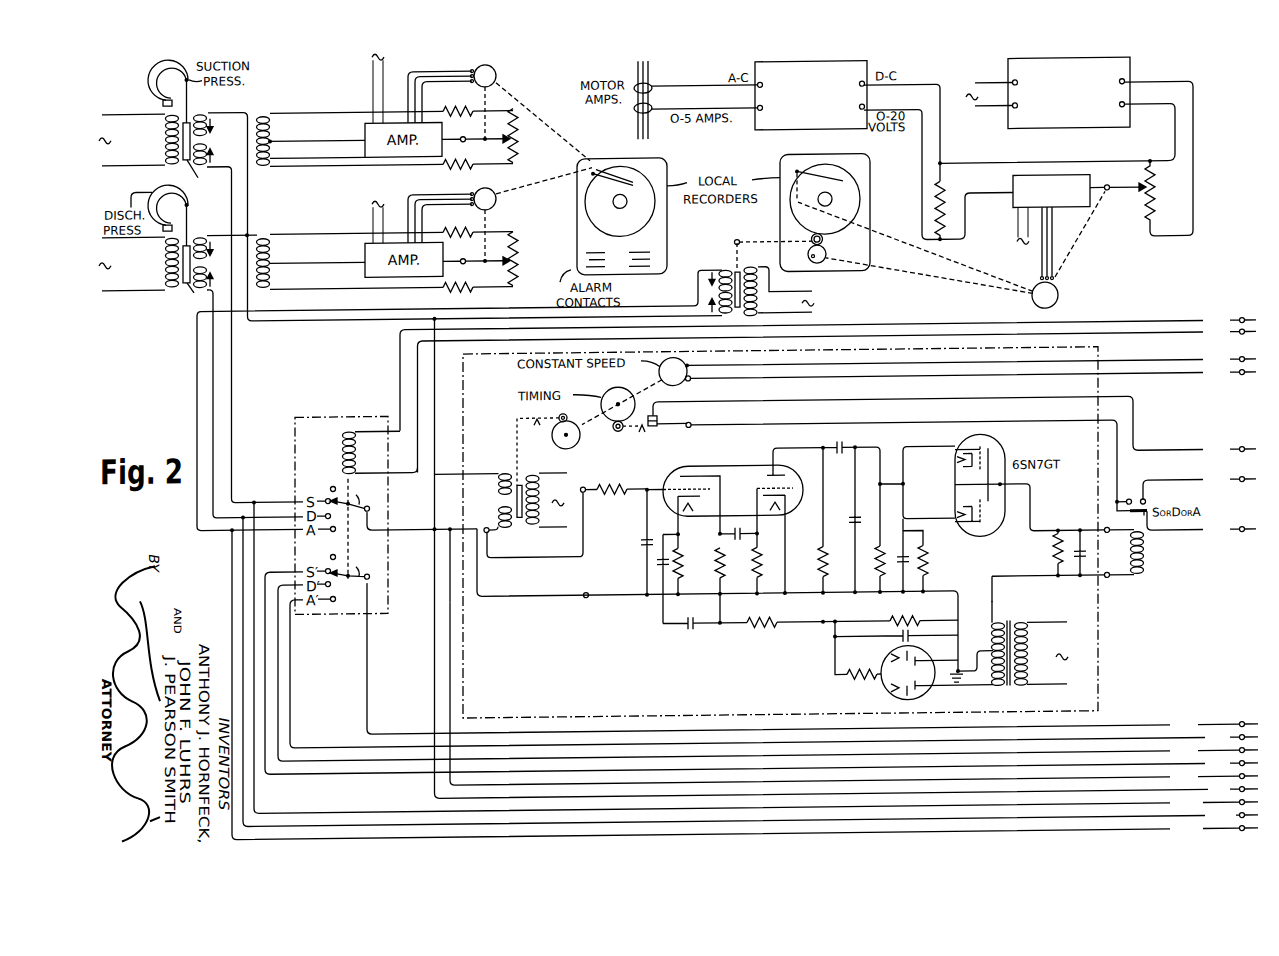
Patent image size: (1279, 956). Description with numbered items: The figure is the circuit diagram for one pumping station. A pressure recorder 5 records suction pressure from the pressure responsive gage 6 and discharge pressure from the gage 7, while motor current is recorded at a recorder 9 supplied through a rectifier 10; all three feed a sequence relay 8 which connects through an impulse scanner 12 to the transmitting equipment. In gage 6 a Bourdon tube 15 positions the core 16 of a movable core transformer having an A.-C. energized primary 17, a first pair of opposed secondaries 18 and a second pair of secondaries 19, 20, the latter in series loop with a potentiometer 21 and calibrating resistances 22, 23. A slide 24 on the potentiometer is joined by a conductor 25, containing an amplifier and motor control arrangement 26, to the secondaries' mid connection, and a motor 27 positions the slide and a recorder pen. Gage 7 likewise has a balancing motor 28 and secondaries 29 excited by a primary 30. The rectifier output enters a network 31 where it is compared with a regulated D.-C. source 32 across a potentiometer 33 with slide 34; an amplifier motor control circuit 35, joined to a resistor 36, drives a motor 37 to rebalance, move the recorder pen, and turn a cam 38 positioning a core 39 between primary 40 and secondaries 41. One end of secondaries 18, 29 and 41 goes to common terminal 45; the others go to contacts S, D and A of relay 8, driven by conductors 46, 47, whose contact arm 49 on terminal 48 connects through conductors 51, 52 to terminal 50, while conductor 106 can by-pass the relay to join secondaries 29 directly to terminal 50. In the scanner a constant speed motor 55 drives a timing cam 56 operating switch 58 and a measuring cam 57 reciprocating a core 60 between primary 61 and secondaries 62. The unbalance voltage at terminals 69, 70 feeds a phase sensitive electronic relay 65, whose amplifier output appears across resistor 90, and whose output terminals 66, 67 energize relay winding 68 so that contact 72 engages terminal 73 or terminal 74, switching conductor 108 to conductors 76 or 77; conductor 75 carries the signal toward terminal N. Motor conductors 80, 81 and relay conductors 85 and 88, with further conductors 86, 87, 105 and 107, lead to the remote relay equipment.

The pressure recorder 5 is at (577, 215).
The suction pressure gage 6 is at (205, 107).
The discharge pressure gage 7 is at (205, 226).
The sequence relay 8 is at (380, 418).
The motor current recorder 9 is at (871, 203).
The rectifier 10 is at (811, 95).
The impulse scanner 12 is at (722, 716).
The Bourdon tube 15 is at (154, 81).
The movable core 16 is at (202, 175).
The primary winding 17 is at (164, 147).
The first pair of opposed secondaries 18 is at (208, 141).
The secondary winding 19 is at (271, 124).
The secondary winding 20 is at (271, 150).
The potentiometer 21 is at (525, 148).
The calibrating resistance 22 is at (451, 108).
The calibrating resistance 23 is at (452, 170).
The slide 24 is at (470, 142).
The conductor 25 is at (318, 141).
The amplifier and motor control arrangement 26 is at (364, 152).
The balancing motor 27 is at (497, 80).
The balancing motor 28 is at (497, 207).
The pair of secondaries 29 is at (200, 274).
The primary winding 30 is at (164, 272).
The network 31 is at (1032, 154).
The regulated D.-C. source 32 is at (1132, 72).
The potentiometer 33 is at (1157, 193).
The slide 34 is at (1111, 191).
The amplifier motor control circuit 35 is at (1013, 201).
The resistor 36 is at (948, 188).
The motor 37 is at (1059, 298).
The cam 38 is at (826, 243).
The movable core 39 is at (735, 266).
The primary winding 40 is at (760, 297).
The secondaries 41 is at (717, 290).
The common terminal 45 is at (436, 472).
The conductor 46 is at (400, 430).
The conductor 47 is at (397, 482).
The terminal 48 is at (432, 525).
The contact arm 49 is at (368, 503).
The terminal 50 is at (488, 525).
The conductor 51 is at (424, 576).
The conductor 52 is at (450, 686).
The constant speed motor 55 is at (686, 383).
The timing cam 56 is at (607, 418).
The measuring cam 57 is at (562, 447).
The electric switch 58 is at (667, 429).
The movable core 60 is at (521, 517).
The primary winding 61 is at (540, 490).
The pair of opposed secondaries 62 is at (498, 486).
The phase sensitive electronic relay 65 is at (854, 564).
The output terminal 66 is at (1108, 533).
The output terminal 67 is at (1108, 578).
The magnetic relay winding 68 is at (1141, 568).
The input terminal 69 is at (583, 487).
The input terminal 70 is at (586, 597).
The relay contact 72 is at (1130, 514).
The terminal 73 is at (1148, 514).
The terminal 74 is at (1143, 499).
The conductor 75 is at (954, 430).
The conductor 76 is at (1201, 524).
The conductor 77 is at (1199, 484).
The conductor 80 is at (970, 362).
The conductor 81 is at (971, 375).
The conductor 85 is at (368, 663).
The conductor 86 is at (291, 704).
The conductor 87 is at (320, 752).
The conductor 88 is at (343, 773).
The resistor 90 is at (880, 555).
The conductor 105 is at (755, 656).
The conductor 106 is at (749, 670).
The conductor 107 is at (744, 682).
The conductor 108 is at (1037, 427).